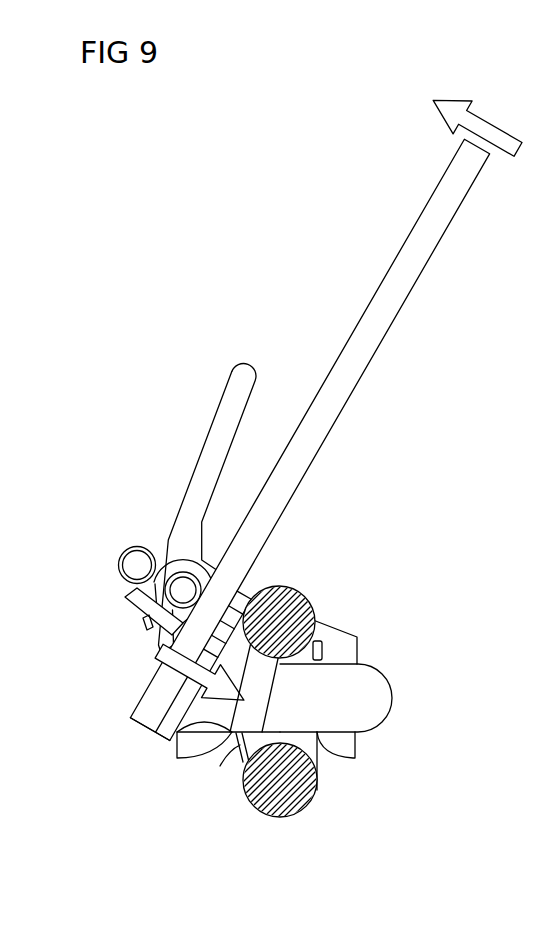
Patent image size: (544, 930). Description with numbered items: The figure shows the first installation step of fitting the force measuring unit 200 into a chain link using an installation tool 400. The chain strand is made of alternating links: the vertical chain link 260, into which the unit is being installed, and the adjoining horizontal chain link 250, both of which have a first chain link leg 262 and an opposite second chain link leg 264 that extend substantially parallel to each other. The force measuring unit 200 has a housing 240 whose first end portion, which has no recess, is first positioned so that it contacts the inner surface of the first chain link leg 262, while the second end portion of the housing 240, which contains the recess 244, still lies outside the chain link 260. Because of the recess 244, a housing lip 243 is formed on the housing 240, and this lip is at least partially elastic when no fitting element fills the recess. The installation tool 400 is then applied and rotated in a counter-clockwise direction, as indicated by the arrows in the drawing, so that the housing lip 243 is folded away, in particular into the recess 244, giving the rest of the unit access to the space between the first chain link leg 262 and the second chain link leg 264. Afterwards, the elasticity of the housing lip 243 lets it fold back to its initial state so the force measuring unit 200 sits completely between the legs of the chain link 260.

The force measuring unit 200 is at (168, 758).
The housing 240 is at (196, 714).
The housing lip 243 is at (236, 748).
The recess 244 is at (250, 743).
The horizontal chain link 250 is at (375, 661).
The vertical chain link 260 is at (322, 787).
The first chain link leg 262 is at (292, 593).
The second chain link leg 264 is at (294, 793).
The installation tool 400 is at (411, 256).